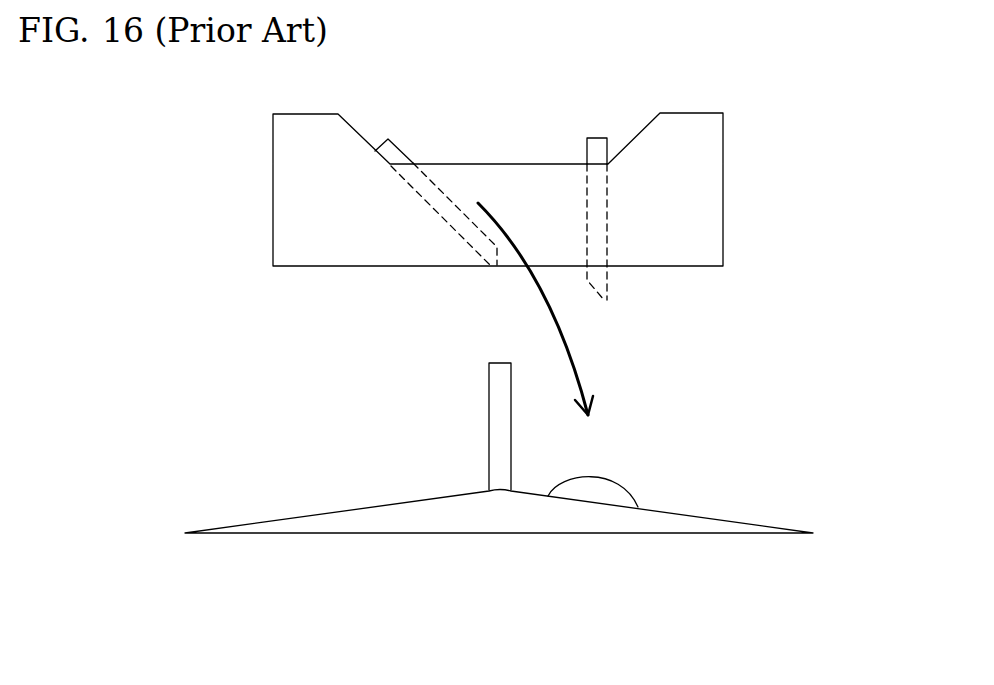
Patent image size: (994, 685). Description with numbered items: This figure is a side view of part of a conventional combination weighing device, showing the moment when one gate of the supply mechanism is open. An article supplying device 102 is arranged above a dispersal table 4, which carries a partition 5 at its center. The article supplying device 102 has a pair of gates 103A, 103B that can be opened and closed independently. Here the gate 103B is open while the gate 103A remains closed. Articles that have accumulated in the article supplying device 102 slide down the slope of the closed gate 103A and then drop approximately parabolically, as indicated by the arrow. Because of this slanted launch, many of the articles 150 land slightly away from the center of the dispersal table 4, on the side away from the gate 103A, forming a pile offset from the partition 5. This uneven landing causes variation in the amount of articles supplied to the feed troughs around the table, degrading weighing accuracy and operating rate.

The article supplying device 102 is at (683, 188).
The gate 103A is at (425, 192).
The gate 103B is at (593, 215).
The partition 5 is at (497, 430).
The dispersal table 4 is at (490, 522).
The articles 150 is at (595, 495).